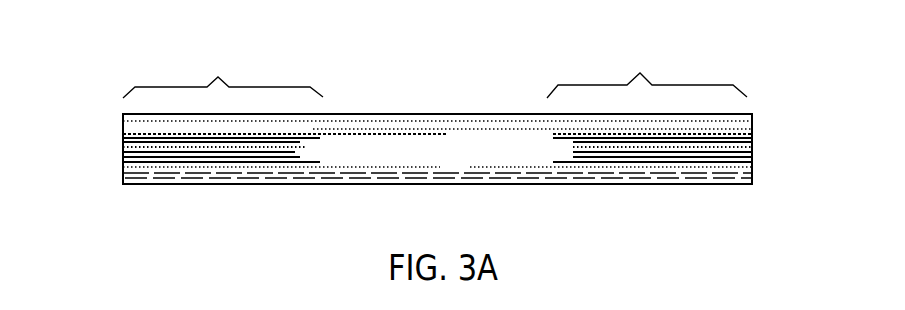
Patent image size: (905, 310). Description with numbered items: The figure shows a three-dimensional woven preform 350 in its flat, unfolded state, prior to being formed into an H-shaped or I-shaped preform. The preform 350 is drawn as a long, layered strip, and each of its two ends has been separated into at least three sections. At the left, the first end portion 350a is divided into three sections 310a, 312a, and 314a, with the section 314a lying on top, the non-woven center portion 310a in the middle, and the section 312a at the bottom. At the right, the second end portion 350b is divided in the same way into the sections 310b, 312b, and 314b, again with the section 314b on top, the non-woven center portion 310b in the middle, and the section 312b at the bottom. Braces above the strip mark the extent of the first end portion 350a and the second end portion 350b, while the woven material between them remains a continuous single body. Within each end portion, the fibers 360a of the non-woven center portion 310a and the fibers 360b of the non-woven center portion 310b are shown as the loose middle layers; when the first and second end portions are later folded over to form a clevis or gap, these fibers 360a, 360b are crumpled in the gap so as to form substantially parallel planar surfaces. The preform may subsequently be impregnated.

The 3D woven preform 350 is at (442, 114).
The first end portion 350a is at (223, 68).
The second end portion 350b is at (647, 69).
The fibers 360a is at (228, 150).
The fibers 360b is at (672, 150).
The section 314a is at (123, 127).
The section 314b is at (752, 125).
The non-woven center portion 310a is at (123, 150).
The non-woven center portion 310b is at (752, 143).
The section 312a is at (123, 168).
The section 312b is at (752, 168).